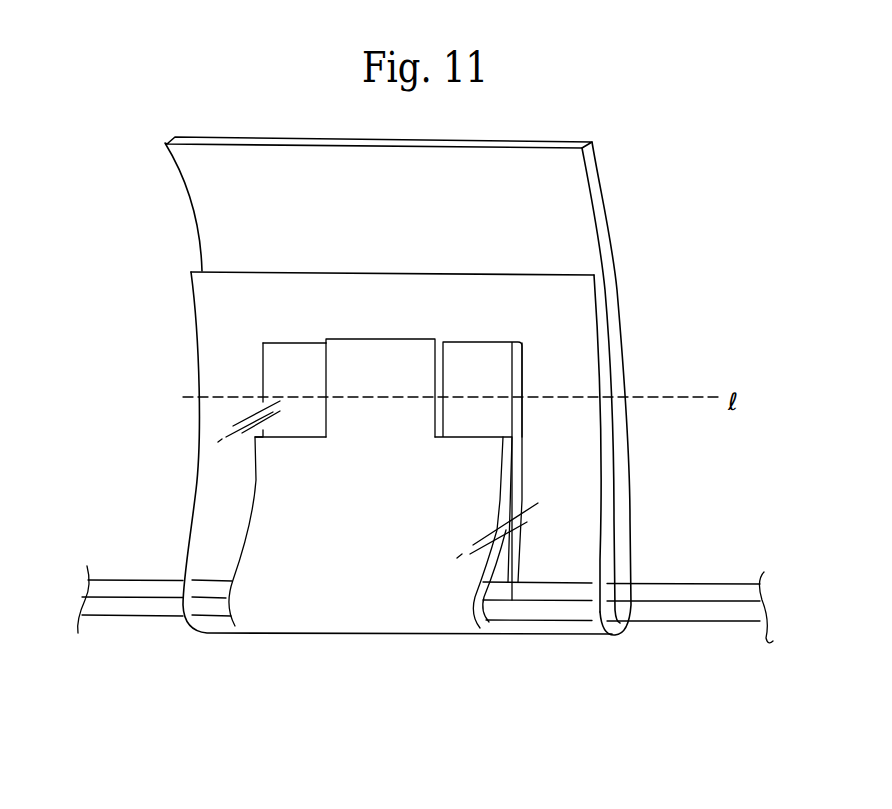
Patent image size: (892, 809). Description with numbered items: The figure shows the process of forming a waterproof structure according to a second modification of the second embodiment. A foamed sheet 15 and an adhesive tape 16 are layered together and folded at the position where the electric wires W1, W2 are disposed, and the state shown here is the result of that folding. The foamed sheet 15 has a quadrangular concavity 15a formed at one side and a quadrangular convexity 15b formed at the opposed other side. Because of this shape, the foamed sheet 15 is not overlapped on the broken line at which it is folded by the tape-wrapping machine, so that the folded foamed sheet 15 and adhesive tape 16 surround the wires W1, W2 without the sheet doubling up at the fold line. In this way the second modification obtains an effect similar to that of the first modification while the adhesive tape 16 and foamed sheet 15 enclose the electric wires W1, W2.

The foamed sheet 15 is at (442, 496).
The quadrangular concavity 15a is at (445, 383).
The quadrangular convexity 15b is at (399, 350).
The adhesive tape 16 is at (572, 213).
The electric wire W1 is at (132, 585).
The electric wire W2 is at (143, 607).